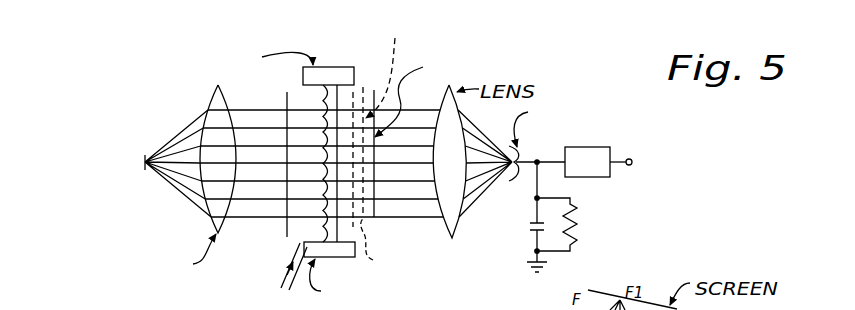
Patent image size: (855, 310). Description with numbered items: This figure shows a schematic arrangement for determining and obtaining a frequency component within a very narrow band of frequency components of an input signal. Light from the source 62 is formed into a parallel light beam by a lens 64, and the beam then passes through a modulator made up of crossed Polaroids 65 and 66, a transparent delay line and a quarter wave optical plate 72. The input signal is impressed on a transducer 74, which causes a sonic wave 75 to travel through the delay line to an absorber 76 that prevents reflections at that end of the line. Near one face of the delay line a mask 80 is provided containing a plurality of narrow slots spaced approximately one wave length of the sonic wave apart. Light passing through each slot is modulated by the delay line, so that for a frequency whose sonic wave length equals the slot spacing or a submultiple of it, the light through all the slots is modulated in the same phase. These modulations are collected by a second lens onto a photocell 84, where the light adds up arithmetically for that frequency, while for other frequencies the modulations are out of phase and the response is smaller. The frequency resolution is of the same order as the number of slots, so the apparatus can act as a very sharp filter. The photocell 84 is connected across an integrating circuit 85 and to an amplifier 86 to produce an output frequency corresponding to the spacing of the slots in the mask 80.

The source 62 is at (145, 165).
The lens 64 is at (212, 97).
The Polaroid 65 is at (286, 97).
The Polaroid 66 is at (378, 208).
The quarter wave optical plate 72 is at (356, 223).
The transducer 74 is at (332, 258).
The sonic wave 75 is at (322, 97).
The absorber 76 is at (332, 67).
The mask 80 is at (352, 92).
The photocell 84 is at (570, 160).
The integrating circuit 85 is at (577, 217).
The amplifier 86 is at (604, 147).